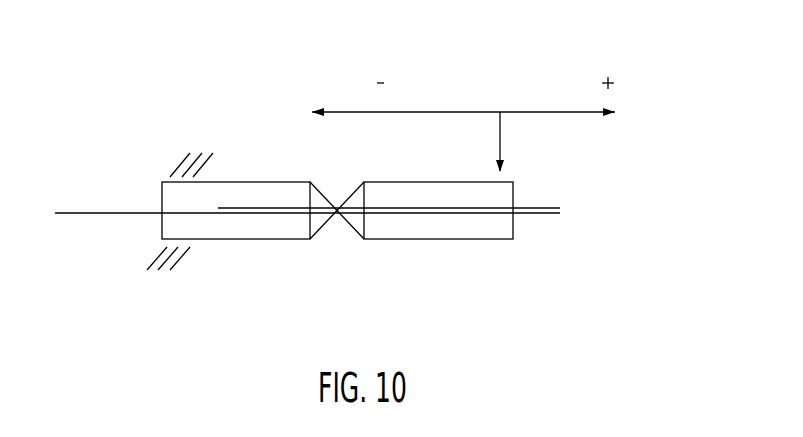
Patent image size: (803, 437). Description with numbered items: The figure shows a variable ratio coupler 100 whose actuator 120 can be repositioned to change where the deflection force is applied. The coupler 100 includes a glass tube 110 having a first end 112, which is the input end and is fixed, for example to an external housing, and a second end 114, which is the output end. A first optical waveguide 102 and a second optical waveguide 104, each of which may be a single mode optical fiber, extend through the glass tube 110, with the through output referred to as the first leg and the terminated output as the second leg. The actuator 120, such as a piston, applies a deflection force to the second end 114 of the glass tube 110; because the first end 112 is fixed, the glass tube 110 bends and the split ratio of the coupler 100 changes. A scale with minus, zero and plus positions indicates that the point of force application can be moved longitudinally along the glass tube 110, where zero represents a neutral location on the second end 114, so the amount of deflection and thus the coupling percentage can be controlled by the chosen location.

The coupler 100 is at (106, 118).
The first optical waveguide 102 is at (95, 214).
The second optical waveguide 104 is at (551, 207).
The glass tube 110 is at (248, 182).
The first end 112 is at (220, 247).
The second end 114 is at (496, 242).
The actuator 120 is at (484, 141).